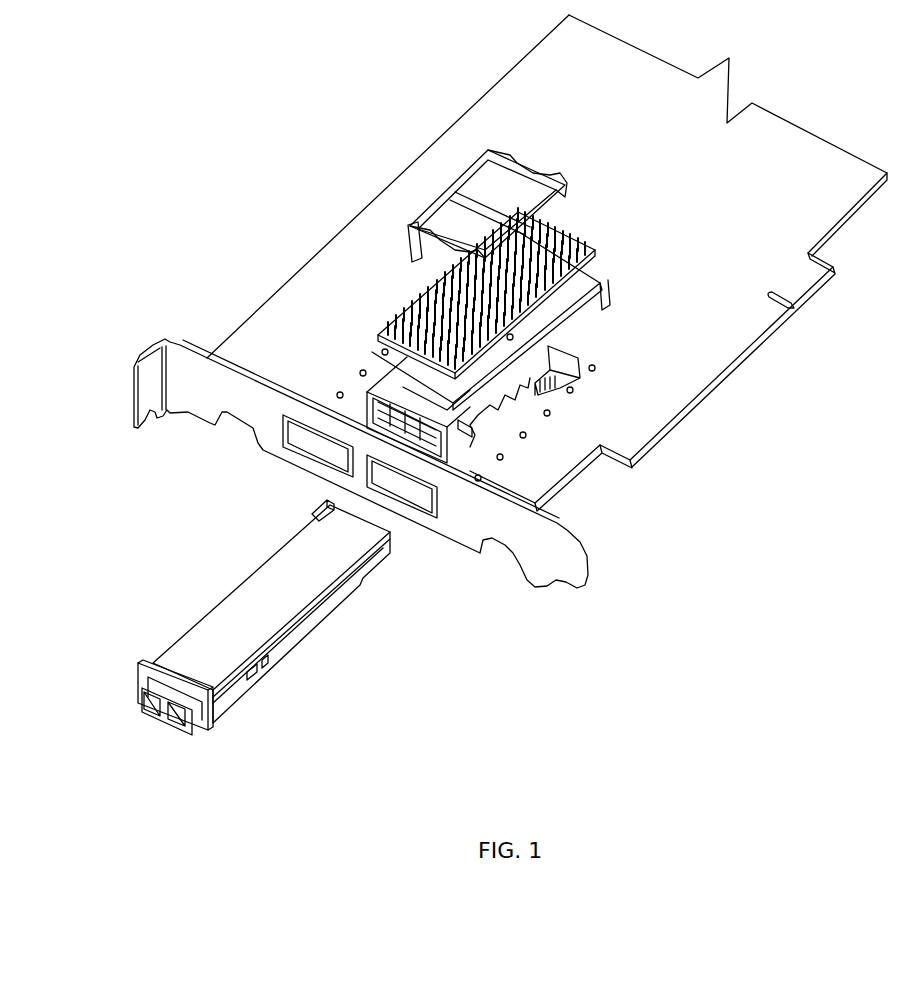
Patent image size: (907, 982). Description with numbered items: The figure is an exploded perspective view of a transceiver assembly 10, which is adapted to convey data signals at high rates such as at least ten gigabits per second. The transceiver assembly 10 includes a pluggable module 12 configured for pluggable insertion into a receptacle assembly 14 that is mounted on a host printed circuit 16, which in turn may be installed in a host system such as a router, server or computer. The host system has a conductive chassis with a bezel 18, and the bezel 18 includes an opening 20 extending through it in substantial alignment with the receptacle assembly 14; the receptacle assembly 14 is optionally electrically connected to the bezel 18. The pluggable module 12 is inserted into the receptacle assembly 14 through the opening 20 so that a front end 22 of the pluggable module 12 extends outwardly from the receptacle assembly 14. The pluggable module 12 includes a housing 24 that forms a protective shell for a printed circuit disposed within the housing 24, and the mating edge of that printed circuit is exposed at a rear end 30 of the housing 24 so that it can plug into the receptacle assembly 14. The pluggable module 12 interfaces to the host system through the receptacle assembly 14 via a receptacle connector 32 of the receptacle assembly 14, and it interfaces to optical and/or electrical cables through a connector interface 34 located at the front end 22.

The transceiver assembly 10 is at (237, 170).
The pluggable module 12 is at (217, 651).
The receptacle assembly 14 is at (620, 231).
The host printed circuit 16 is at (713, 337).
The bezel 18 is at (198, 395).
The opening 20 is at (335, 447).
The front end 22 is at (137, 677).
The housing 24 is at (322, 608).
The rear end 30 is at (332, 490).
The receptacle connector 32 is at (600, 378).
The connector interface 34 is at (173, 720).